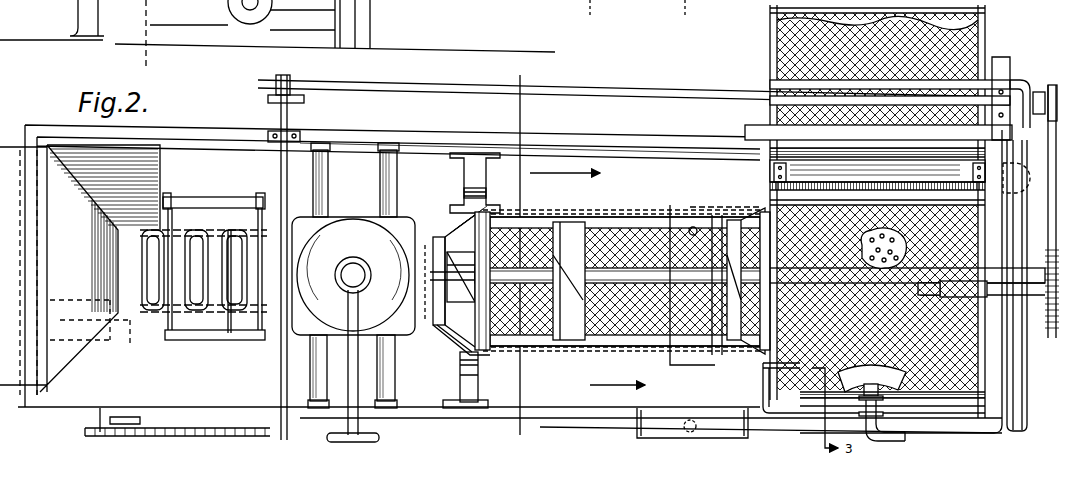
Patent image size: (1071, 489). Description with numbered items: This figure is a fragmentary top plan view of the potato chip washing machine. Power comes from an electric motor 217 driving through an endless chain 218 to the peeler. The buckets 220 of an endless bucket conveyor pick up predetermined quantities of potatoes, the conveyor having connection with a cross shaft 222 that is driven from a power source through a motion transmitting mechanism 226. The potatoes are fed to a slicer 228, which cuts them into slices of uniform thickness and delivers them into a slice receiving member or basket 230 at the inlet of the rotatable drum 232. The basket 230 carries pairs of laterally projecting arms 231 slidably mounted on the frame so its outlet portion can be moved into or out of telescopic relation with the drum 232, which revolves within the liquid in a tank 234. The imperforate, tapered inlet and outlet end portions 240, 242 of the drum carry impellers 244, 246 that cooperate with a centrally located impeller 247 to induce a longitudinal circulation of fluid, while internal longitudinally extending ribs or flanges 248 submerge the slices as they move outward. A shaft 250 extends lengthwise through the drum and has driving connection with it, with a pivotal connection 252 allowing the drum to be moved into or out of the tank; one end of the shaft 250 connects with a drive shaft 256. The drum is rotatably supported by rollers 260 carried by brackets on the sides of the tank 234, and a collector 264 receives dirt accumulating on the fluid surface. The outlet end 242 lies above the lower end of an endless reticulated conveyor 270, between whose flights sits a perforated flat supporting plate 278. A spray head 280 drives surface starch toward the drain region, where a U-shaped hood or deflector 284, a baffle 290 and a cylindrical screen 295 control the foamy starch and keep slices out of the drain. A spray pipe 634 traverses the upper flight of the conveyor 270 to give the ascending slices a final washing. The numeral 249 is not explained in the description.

The electric motor 217 is at (312, 26).
The endless chain 218 is at (51, 20).
The buckets 220 is at (155, 232).
The cross shaft 222 is at (290, 113).
The motion transmitting mechanism 226 is at (165, 425).
The slicer 228 is at (388, 245).
The slice receiving member or basket 230 is at (430, 327).
The laterally projecting arms 231 is at (383, 180).
The drum 232 is at (535, 215).
The tank 234 is at (633, 160).
The inlet end portion of the drum 240 is at (456, 360).
The outlet end portion of the drum 242 is at (740, 370).
The impeller 244 is at (457, 238).
The impeller 246 is at (691, 228).
The centrally located impeller 247 is at (659, 281).
The internal longitudinally extending ribs or flanges 248 is at (737, 258).
The chain 249 is at (582, 346).
The shaft 250 is at (608, 279).
The pivotal connection 252 is at (1050, 144).
The drive shaft 256 is at (594, 96).
The rollers 260 is at (470, 195).
The collector 264 is at (749, 438).
The endless conveyor 270 is at (877, 211).
The flat supporting plate 278 is at (768, 214).
The spray head 280 is at (882, 379).
The U-shaped hood or deflector 284 is at (877, 182).
The baffle 290 is at (840, 146).
The cylindrical screen 295 is at (941, 195).
The spray pipe 634 is at (982, 46).